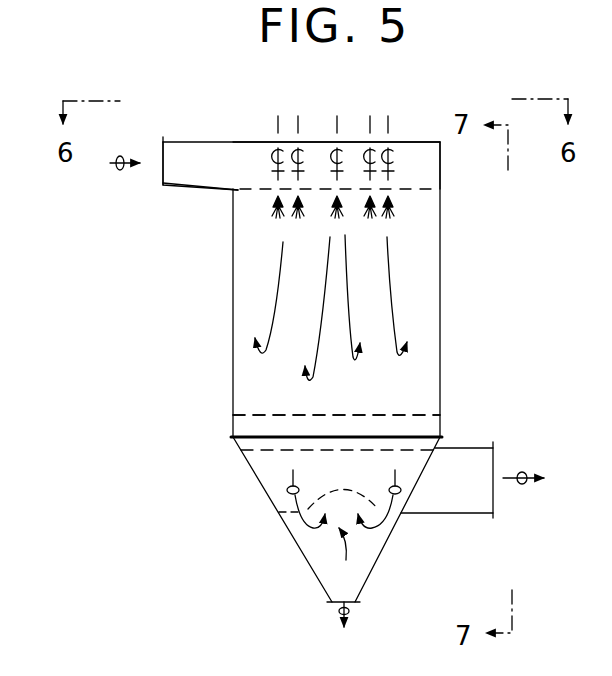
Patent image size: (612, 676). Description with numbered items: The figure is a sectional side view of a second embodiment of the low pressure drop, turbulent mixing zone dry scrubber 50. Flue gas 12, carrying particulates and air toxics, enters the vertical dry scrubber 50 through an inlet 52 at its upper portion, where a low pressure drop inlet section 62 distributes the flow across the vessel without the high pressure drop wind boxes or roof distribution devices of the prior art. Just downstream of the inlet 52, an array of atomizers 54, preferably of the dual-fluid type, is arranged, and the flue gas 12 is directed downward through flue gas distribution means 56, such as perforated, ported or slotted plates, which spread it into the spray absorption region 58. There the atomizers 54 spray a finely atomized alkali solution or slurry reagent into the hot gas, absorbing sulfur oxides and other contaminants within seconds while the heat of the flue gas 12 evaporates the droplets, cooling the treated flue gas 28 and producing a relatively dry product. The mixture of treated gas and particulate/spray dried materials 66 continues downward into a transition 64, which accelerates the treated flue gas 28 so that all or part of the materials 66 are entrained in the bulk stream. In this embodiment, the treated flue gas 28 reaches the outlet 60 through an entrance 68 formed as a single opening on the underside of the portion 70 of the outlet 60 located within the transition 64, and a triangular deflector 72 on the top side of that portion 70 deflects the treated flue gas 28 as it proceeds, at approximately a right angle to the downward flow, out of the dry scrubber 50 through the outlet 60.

The flue gas 12 is at (121, 170).
The treated flue gas 28 is at (287, 490).
The dry scrubber 50 is at (182, 327).
The inlet 52 is at (195, 170).
The atomizers 54 is at (337, 123).
The flue gas distribution means 56 is at (407, 190).
The spray absorption region 58 is at (420, 290).
The outlet 60 is at (448, 506).
The low pressure drop inlet section 62 is at (415, 153).
The transition 64 is at (305, 543).
The particulate/spray dried materials 66 is at (340, 608).
The entrance 68 is at (343, 559).
The portion of the outlet located within the transition 70 is at (358, 483).
The deflector 72 is at (240, 429).